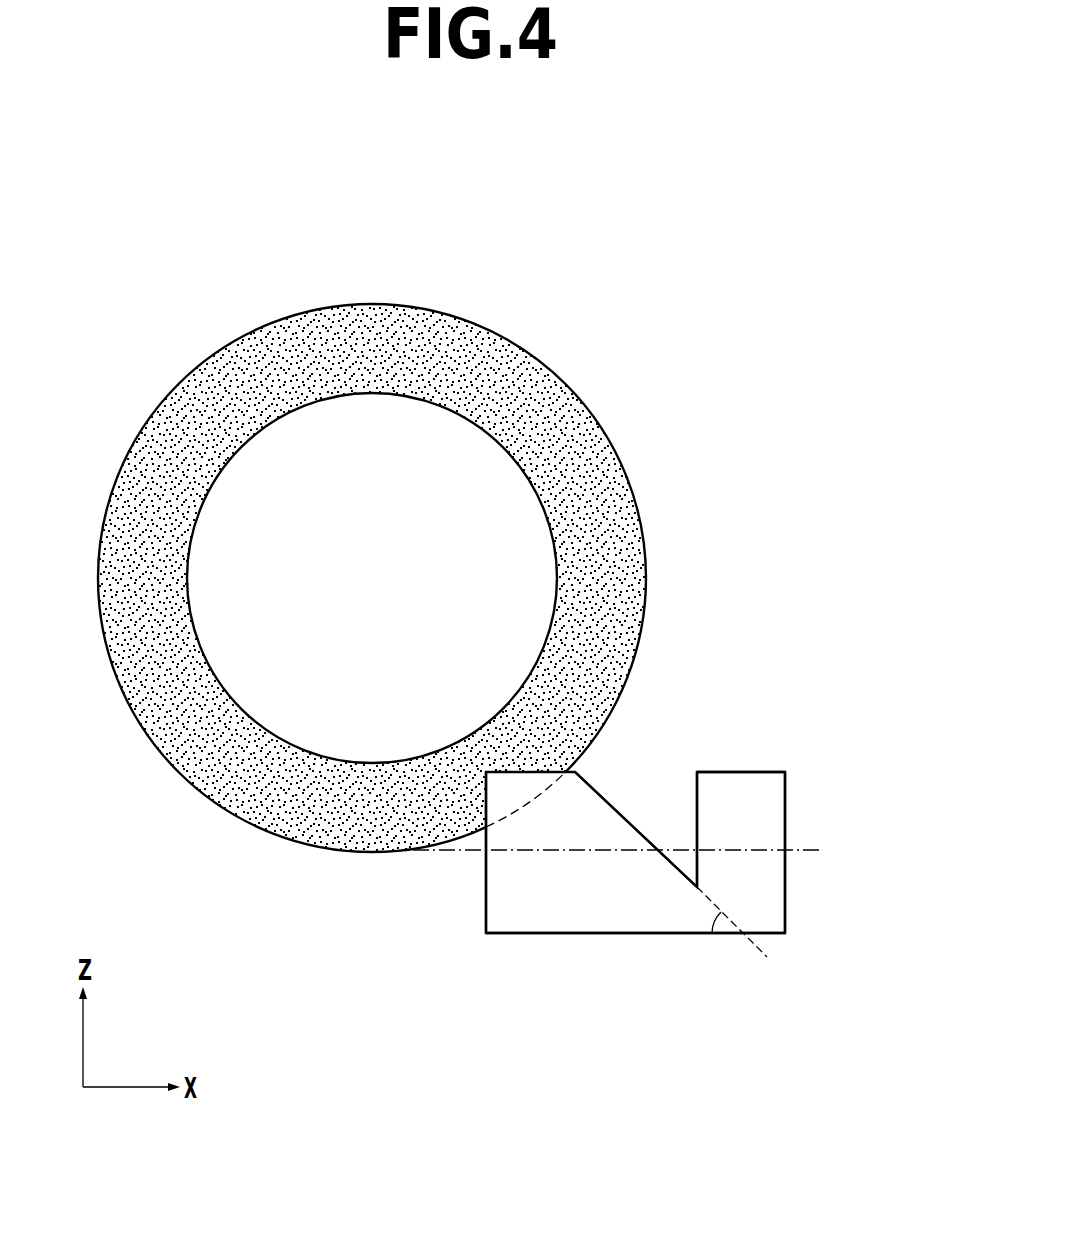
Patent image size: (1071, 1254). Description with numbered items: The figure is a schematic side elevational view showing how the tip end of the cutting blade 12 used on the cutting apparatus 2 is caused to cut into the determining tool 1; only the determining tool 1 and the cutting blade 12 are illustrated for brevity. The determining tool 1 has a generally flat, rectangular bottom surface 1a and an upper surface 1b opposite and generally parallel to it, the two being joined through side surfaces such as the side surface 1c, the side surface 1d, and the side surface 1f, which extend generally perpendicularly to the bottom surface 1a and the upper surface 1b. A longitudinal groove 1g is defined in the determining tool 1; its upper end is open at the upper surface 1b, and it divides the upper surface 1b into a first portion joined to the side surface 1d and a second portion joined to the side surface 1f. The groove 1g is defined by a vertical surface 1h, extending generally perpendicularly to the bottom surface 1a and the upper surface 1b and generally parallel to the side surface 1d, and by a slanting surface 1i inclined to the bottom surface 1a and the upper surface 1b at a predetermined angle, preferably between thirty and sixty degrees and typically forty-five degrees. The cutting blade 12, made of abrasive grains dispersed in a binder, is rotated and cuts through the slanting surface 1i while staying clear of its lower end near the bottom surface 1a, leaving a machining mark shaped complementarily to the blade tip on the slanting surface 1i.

The determining tool 1 is at (818, 768).
The bottom surface 1a is at (773, 935).
The upper surface 1b is at (755, 772).
The side surface 1c is at (587, 913).
The side surface 1d is at (785, 900).
The side surface 1f is at (486, 897).
The groove 1g is at (775, 663).
The vertical surface 1h is at (697, 812).
The slanting surface 1i is at (602, 797).
The cutting apparatus 2 is at (700, 295).
The cutting blade 12 is at (372, 318).